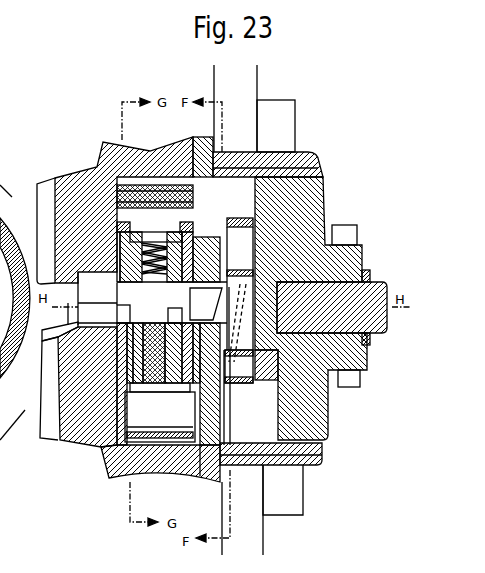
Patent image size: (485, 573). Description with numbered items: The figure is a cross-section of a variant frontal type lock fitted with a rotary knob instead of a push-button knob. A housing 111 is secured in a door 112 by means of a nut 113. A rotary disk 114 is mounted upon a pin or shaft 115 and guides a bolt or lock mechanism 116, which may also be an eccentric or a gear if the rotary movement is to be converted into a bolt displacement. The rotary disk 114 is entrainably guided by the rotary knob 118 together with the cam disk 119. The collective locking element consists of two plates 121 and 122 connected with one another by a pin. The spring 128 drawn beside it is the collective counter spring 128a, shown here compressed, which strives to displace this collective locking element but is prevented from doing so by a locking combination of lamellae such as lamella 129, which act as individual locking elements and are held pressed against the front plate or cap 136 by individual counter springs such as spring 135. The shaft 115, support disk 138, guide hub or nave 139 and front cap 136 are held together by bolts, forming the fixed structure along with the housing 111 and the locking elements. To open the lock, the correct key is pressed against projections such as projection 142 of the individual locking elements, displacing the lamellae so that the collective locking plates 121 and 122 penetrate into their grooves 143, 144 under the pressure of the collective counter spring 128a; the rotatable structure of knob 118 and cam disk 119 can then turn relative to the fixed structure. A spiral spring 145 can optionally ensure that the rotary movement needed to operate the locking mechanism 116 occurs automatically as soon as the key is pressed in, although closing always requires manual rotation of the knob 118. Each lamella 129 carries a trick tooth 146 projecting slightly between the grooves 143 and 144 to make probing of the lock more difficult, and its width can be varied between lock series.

The housing 111 is at (309, 158).
The door 112 is at (238, 310).
The nut 113 is at (280, 307).
The rotary disk 114 is at (316, 208).
The pin or shaft 115 is at (367, 279).
The bolt or lock mechanism 116 is at (350, 388).
The rotary knob 118 is at (100, 158).
The cam disk 119 is at (193, 196).
The plate 121 is at (160, 412).
The plate 122 is at (160, 422).
The spring 128 is at (172, 252).
The collective counter spring 128a is at (155, 269).
The lamella 129 is at (121, 307).
The individual counter spring 135 is at (241, 366).
The front plate or cap 136 is at (90, 441).
The support disk 138 is at (230, 412).
The guide hub or nave 139 is at (43, 438).
The projection 142 is at (57, 326).
The groove 143 is at (92, 298).
The groove 144 is at (218, 323).
The spiral spring 145 is at (240, 217).
The trick tooth 146 is at (159, 316).